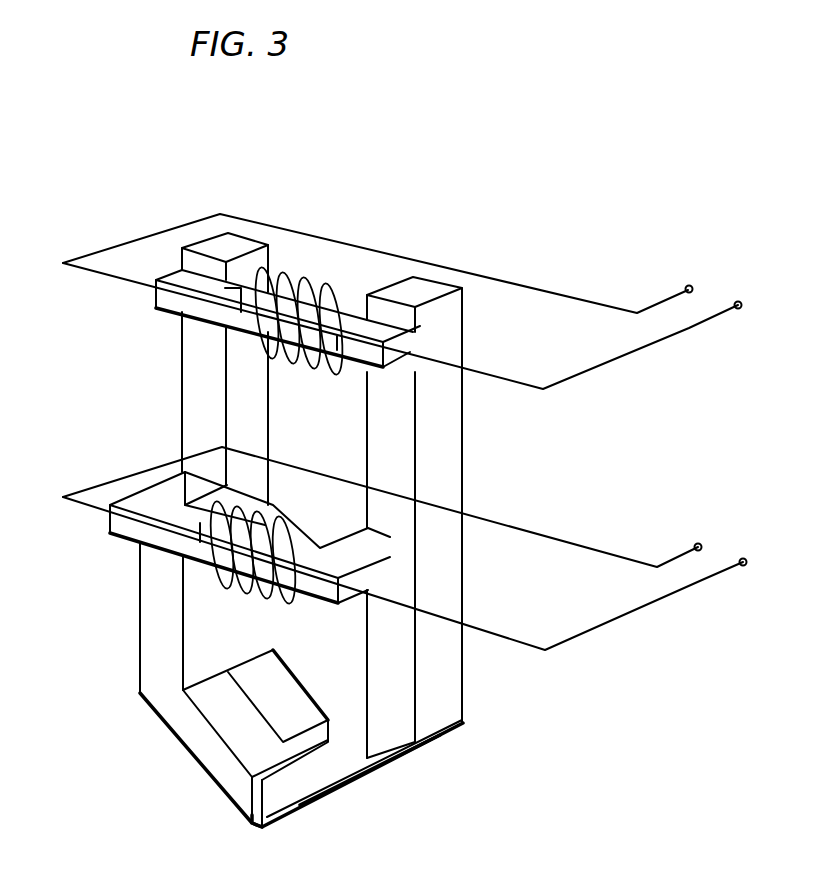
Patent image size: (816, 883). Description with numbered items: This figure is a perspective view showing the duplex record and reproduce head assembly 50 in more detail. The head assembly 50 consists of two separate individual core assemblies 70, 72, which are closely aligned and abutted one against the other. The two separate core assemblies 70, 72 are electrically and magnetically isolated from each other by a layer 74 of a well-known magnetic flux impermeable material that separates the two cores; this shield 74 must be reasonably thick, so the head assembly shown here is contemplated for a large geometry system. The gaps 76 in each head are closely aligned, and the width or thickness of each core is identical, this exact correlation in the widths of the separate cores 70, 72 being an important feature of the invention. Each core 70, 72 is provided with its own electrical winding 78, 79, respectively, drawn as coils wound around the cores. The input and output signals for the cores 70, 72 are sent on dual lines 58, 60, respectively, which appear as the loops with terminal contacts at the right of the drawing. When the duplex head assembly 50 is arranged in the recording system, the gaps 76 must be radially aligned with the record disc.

The duplex record and reproduce head assembly 50 is at (399, 222).
The dual lines 58 is at (689, 327).
The dual lines 60 is at (702, 580).
The core assembly 70 is at (160, 641).
The core assembly 72 is at (183, 400).
The layer 74 is at (367, 777).
The gaps 76 is at (257, 828).
The electrical winding 78 is at (287, 530).
The electrical winding 79 is at (315, 285).